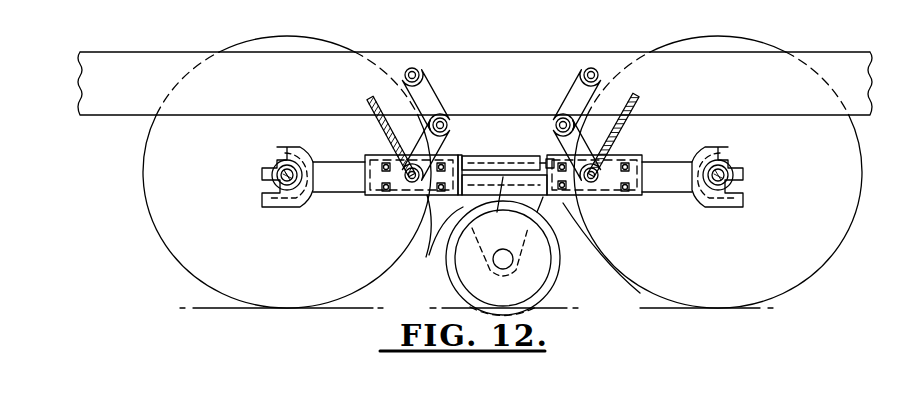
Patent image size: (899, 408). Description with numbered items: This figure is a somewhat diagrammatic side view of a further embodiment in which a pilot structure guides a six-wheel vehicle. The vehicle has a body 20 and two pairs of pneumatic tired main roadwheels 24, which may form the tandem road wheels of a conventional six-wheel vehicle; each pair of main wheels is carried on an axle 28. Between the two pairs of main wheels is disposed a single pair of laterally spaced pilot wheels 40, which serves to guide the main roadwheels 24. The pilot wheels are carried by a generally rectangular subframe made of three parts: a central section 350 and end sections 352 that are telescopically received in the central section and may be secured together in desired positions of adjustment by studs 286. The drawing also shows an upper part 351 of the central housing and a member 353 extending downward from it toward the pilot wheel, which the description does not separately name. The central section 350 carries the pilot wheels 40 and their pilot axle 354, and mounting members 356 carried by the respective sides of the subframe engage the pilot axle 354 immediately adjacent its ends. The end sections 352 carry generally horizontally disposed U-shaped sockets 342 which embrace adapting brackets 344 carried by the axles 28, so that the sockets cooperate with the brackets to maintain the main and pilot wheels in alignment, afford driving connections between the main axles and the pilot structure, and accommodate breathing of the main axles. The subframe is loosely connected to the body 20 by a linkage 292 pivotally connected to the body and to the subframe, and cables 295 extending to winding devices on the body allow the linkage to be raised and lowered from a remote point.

The body 20 is at (503, 52).
The roadwheels 24 is at (184, 262).
The axle 28 is at (277, 180).
The pilot wheels 40 is at (541, 291).
The studs 286 is at (386, 191).
The linkage 292 is at (430, 80).
The cables 295 is at (371, 98).
The U-shaped sockets 342 is at (302, 152).
The adapting brackets 344 is at (275, 166).
The central section 350 is at (458, 155).
The housing cap 351 is at (508, 156).
The end sections 352 is at (332, 192).
The sliding member 353 is at (500, 200).
The pilot axle 354 is at (510, 262).
The mounting members 356 is at (438, 266).